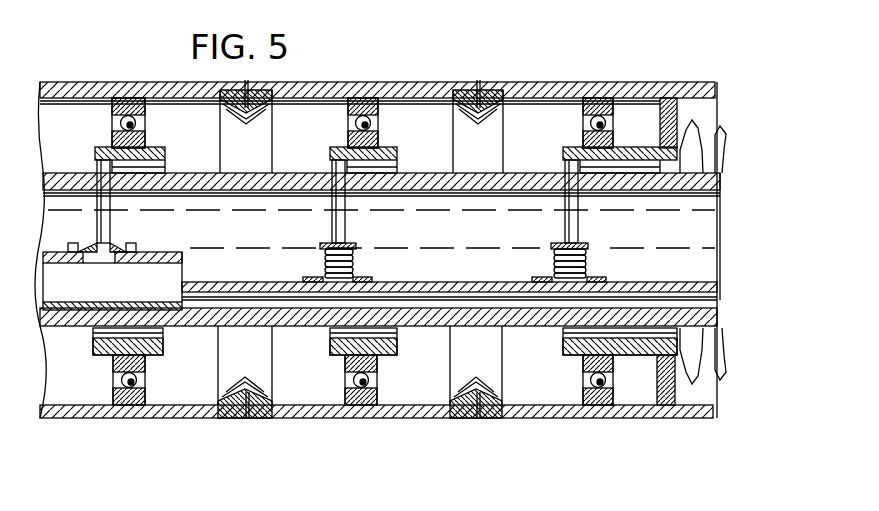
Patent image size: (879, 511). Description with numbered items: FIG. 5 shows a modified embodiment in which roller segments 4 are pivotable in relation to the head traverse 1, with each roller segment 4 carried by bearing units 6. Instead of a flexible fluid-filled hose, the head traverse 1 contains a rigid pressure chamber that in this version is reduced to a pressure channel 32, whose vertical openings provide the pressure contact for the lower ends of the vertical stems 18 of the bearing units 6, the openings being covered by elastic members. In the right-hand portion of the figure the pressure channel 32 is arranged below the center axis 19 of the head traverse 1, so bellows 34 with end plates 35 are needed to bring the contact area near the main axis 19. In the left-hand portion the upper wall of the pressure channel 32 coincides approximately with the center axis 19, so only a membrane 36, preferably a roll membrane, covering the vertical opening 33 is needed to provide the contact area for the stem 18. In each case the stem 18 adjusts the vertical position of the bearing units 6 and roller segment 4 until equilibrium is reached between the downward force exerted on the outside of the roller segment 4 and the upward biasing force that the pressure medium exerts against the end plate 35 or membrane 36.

The head traverse 1 is at (436, 312).
The roller segment 4 is at (104, 90).
The bearing unit 6 is at (98, 124).
The vertical stem 18 is at (110, 221).
The center axis 19 is at (446, 252).
The pressure channel 32 is at (226, 260).
The vertical opening 33 is at (114, 263).
The bellows 34 is at (587, 268).
The end plate 35 is at (556, 247).
The membrane 36 is at (88, 266).